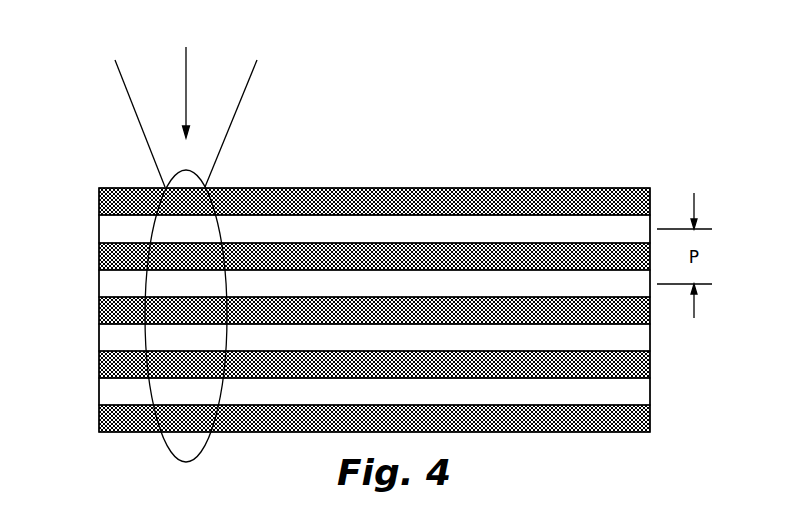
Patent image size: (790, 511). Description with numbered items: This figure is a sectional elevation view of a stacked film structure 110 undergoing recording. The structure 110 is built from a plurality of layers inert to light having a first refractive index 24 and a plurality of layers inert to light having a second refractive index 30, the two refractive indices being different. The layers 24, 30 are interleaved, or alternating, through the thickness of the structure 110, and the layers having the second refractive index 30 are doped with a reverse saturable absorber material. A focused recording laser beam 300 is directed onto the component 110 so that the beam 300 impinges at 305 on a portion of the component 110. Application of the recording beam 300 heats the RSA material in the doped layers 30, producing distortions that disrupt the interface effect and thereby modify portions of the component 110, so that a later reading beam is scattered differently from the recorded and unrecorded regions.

The stacked film structure 110 is at (379, 283).
The layers inert to light having a second refractive index 30 is at (98, 200).
The layers inert to light having a first refractive index 24 is at (102, 229).
The focused recording laser beam 300 is at (186, 78).
The impingement region 305 is at (207, 440).